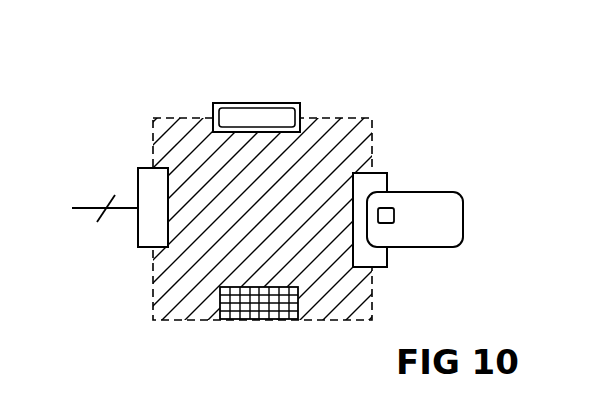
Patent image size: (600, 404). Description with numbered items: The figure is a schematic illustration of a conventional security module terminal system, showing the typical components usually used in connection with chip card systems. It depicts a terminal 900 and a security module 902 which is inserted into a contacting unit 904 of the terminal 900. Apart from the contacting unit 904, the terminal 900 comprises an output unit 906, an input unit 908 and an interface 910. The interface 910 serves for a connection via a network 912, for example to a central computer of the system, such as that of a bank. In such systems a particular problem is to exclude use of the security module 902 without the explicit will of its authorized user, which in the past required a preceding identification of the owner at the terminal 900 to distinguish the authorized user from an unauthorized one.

The terminal 900 is at (362, 118).
The security module 902 is at (447, 202).
The contacting unit 904 is at (378, 175).
The output unit 906 is at (288, 103).
The input unit 908 is at (298, 320).
The interface 910 is at (142, 248).
The network 912 is at (103, 203).